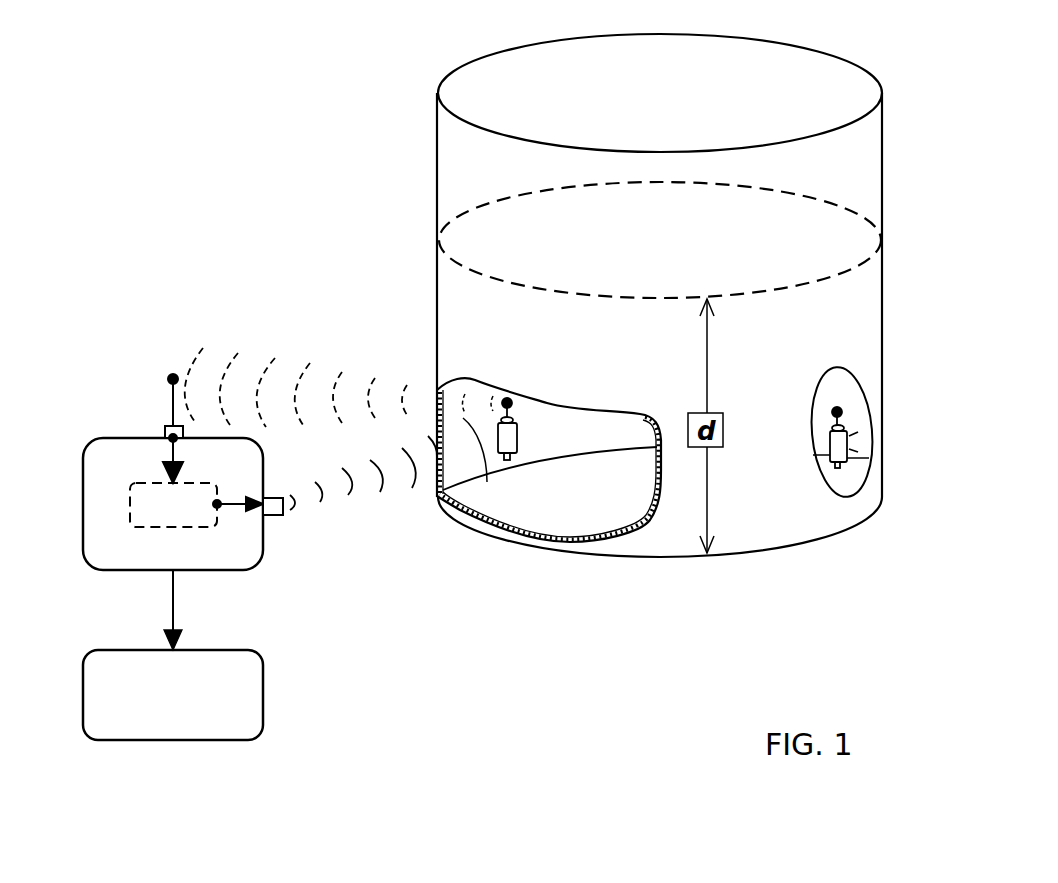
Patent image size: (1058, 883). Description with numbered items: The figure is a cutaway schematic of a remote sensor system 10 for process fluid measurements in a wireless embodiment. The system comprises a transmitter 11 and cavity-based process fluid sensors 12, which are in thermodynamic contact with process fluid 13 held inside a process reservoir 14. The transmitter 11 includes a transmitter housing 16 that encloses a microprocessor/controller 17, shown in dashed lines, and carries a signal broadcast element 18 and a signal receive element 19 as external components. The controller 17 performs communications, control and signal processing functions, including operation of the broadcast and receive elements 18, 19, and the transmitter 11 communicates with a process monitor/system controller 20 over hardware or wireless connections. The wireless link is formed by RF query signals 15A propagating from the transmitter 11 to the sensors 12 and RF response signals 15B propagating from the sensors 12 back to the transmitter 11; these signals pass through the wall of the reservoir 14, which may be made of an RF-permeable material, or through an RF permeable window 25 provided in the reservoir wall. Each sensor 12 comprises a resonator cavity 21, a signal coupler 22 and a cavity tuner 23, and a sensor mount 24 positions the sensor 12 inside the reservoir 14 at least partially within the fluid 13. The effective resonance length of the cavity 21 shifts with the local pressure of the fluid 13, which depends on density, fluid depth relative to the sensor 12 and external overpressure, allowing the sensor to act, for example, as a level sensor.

The remote sensor system 10 is at (142, 54).
The transmitter 11 is at (80, 410).
The cavity-based process fluid sensor 12 is at (677, 427).
The process fluid 13 is at (679, 250).
The process reservoir 14 is at (882, 108).
The RF query signal 15A is at (393, 514).
The RF response signal 15B is at (334, 353).
The transmitter housing 16 is at (83, 505).
The microprocessor/controller 17 is at (128, 528).
The signal broadcast element 18 is at (273, 517).
The signal receive element 19 is at (170, 392).
The process monitor/system controller 20 is at (83, 672).
The resonator cavity 21 is at (515, 442).
The signal coupler 22 is at (512, 403).
The cavity tuner 23 is at (507, 460).
The sensor mount 24 is at (492, 430).
The RF permeable window 25 is at (812, 438).